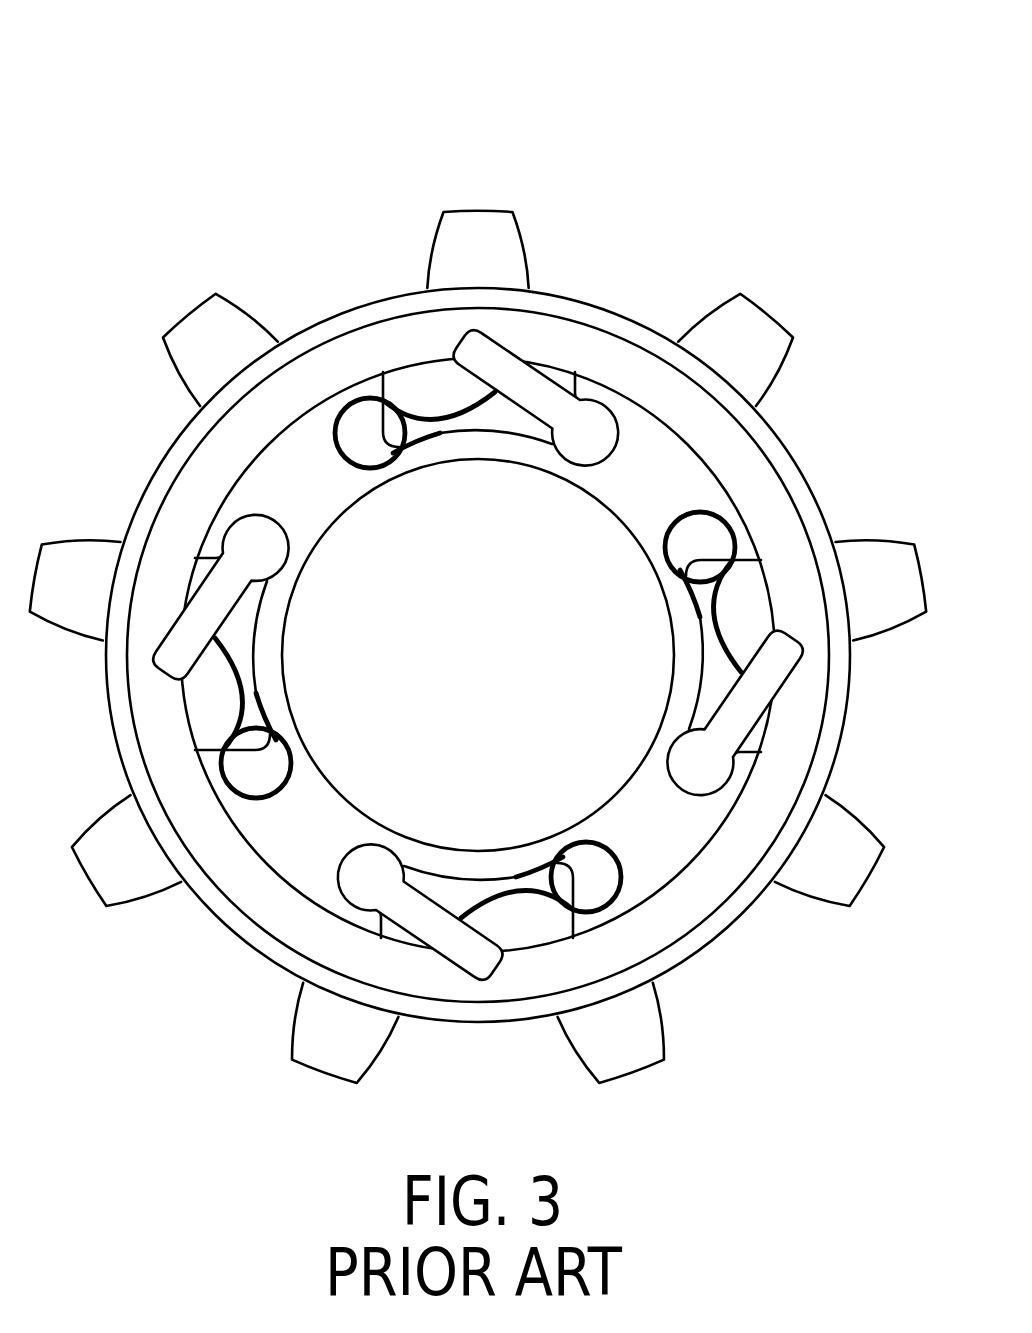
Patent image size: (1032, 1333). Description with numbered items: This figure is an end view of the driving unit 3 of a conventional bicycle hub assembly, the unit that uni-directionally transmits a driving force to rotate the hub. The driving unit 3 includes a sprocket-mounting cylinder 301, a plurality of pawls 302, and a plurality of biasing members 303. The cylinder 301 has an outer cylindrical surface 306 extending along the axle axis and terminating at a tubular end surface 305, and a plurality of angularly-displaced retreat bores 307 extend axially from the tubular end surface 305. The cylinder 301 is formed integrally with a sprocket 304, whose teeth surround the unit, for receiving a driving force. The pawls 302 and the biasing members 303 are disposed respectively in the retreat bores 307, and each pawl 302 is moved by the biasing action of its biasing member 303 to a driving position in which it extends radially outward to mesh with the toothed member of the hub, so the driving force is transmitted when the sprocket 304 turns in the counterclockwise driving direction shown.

The driving unit 3 is at (477, 155).
The sprocket-mounting cylinder 301 is at (237, 470).
The pawls 302 is at (532, 387).
The biasing members 303 is at (405, 413).
The sprocket 304 is at (730, 320).
The tubular end surface 305 is at (285, 845).
The outer cylindrical surface 306 is at (732, 495).
The retreat bores 307 is at (492, 423).